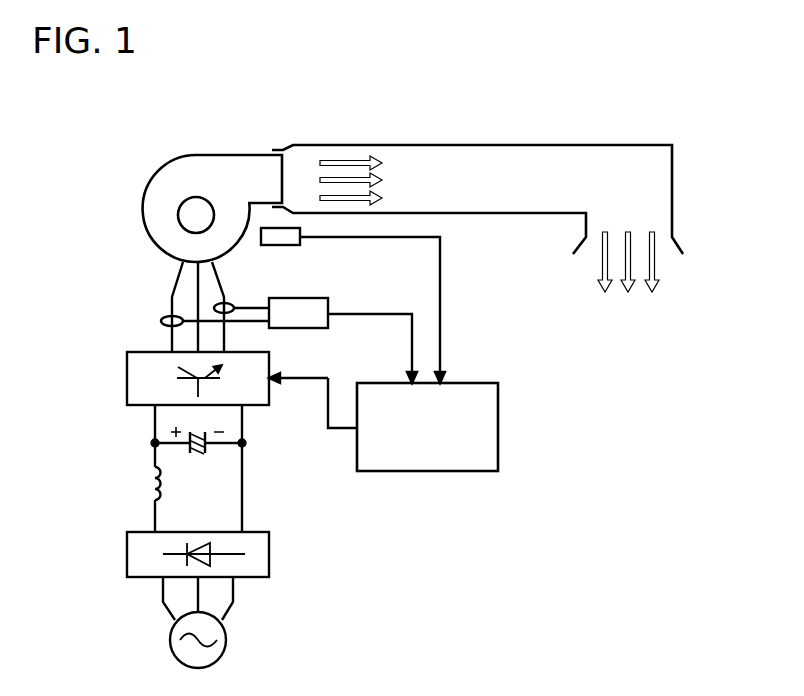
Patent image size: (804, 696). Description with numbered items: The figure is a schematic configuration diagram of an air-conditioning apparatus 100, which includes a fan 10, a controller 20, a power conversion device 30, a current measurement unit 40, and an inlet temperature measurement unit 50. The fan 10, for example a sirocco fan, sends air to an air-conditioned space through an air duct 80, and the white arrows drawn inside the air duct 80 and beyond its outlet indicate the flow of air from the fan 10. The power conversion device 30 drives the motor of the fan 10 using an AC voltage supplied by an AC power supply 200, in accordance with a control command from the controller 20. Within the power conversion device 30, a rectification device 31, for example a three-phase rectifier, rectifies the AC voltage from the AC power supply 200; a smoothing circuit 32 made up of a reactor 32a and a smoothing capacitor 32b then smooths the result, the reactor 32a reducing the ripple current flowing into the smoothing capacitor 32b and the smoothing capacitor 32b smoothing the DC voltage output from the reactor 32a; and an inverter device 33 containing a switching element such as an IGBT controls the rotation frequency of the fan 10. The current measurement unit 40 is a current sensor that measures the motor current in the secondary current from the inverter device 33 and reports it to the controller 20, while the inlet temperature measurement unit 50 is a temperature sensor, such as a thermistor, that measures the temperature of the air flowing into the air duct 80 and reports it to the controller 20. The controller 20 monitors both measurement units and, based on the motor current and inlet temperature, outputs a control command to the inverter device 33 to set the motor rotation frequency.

The fan 10 is at (157, 170).
The air duct 80 is at (520, 145).
The inlet temperature measurement unit 50 is at (278, 249).
The current measurement unit 40 is at (313, 298).
The controller 20 is at (477, 383).
The power conversion device 30 is at (86, 361).
The inverter device 33 is at (143, 352).
The smoothing circuit 32 is at (133, 423).
The reactor 32a is at (167, 500).
The smoothing capacitor 32b is at (210, 453).
The rectification device 31 is at (270, 553).
The AC power supply 200 is at (227, 652).
The air-conditioning apparatus 100 is at (401, 550).